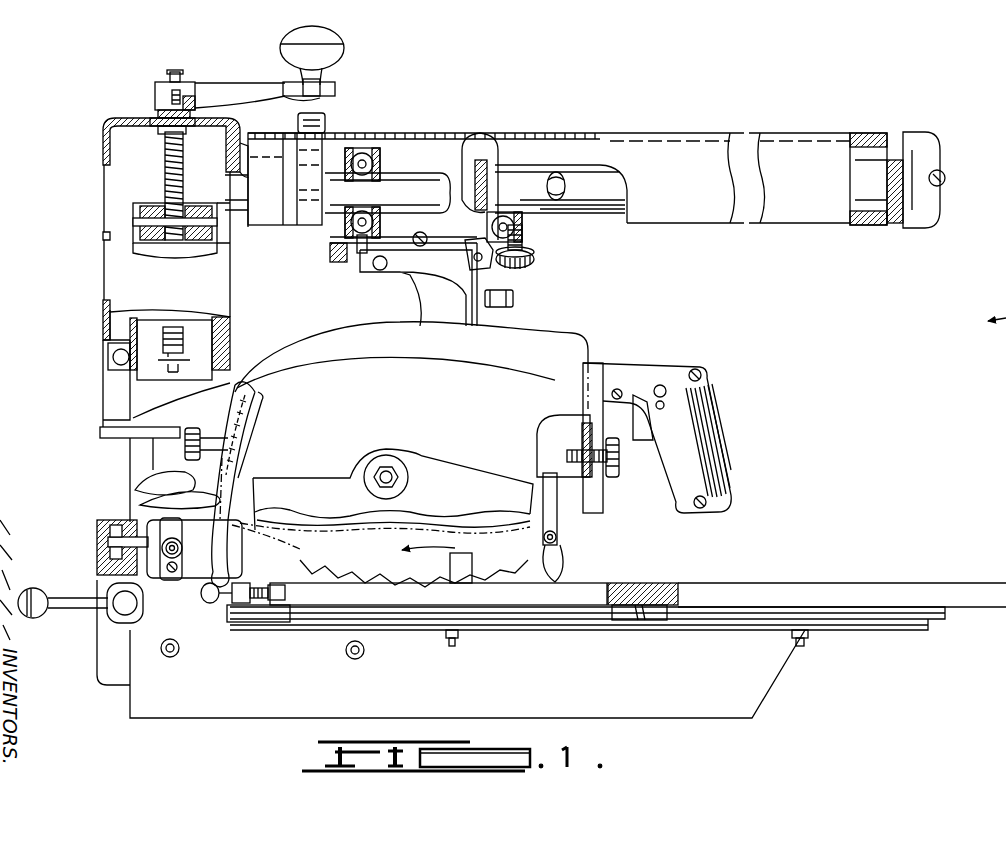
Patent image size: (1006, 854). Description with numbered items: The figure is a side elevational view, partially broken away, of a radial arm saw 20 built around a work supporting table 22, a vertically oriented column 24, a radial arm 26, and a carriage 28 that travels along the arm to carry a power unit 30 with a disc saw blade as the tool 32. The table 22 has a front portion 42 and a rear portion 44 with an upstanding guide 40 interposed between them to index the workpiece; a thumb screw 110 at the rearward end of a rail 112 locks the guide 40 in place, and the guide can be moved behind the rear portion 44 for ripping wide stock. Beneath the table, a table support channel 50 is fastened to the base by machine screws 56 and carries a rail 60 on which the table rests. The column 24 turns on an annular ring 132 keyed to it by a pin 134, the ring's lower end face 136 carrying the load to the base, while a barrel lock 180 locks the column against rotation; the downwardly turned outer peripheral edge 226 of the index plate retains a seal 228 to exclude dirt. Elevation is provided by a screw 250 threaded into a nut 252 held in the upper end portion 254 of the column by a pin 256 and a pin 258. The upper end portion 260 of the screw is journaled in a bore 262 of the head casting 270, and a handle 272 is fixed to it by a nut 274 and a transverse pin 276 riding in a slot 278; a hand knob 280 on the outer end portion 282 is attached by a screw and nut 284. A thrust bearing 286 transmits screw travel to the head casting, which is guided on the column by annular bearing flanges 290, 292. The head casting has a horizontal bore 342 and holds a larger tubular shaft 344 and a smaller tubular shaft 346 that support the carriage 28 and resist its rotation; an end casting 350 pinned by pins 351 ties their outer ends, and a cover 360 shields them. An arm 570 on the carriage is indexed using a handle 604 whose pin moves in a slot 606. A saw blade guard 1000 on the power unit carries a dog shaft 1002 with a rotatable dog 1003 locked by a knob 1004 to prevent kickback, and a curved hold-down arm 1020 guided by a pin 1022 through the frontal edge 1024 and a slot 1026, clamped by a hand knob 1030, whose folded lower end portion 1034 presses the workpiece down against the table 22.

The radial arm saw 20 is at (812, 370).
The work supporting table 22 is at (835, 583).
The column 24 is at (125, 468).
The radial arm 26 is at (705, 132).
The carriage 28 is at (527, 237).
The power unit 30 is at (666, 363).
The tool 32 is at (300, 562).
The guide 40 is at (478, 565).
The front portion 42 is at (740, 590).
The rear portion 44 is at (332, 592).
The table support channel 50 is at (790, 675).
The machine screws 56 is at (340, 652).
The rail 60 is at (740, 619).
The thumb screw 110 is at (200, 598).
The rail 112 is at (563, 623).
The annular ring 132 is at (104, 558).
The pin 134 is at (140, 505).
The lower end face 136 is at (110, 568).
The barrel lock 180 is at (110, 615).
The outer peripheral edge 226 is at (100, 528).
The seal 228 is at (108, 541).
The screw 250 is at (160, 177).
The nut 252 is at (198, 204).
The upper end portion 254 is at (137, 210).
The pin 256 is at (135, 224).
The pin 258 is at (230, 245).
The upper end portion 260 is at (152, 120).
The bore 262 is at (182, 108).
The head casting 270 is at (100, 128).
The handle 272 is at (248, 82).
The nut 274 is at (167, 78).
The transverse pin 276 is at (180, 92).
The slot 278 is at (160, 110).
The hand knob 280 is at (350, 40).
The outer end portion 282 is at (300, 97).
The screw and nut 284 is at (337, 88).
The thrust bearing 286 is at (158, 133).
The annular bearing flange 290 is at (103, 346).
The annular bearing flange 292 is at (103, 424).
The horizontal bore 342 is at (250, 227).
The tubular shaft 344 is at (600, 162).
The tubular shaft 346 is at (563, 172).
The end casting 350 is at (878, 226).
The pins 351 is at (942, 184).
The cover 360 is at (692, 200).
The arm 570 is at (412, 303).
The handle 604 is at (490, 266).
The slot 606 is at (428, 239).
The saw blade guard 1000 is at (548, 330).
The dog shaft 1002 is at (557, 503).
The dog 1003 is at (566, 557).
The knob 1004 is at (592, 482).
The hold-down arm 1020 is at (240, 518).
The pin 1022 is at (250, 440).
The frontal edge 1024 is at (236, 386).
The slot 1026 is at (267, 418).
The hand knob 1030 is at (180, 450).
The lower end portion 1034 is at (252, 525).